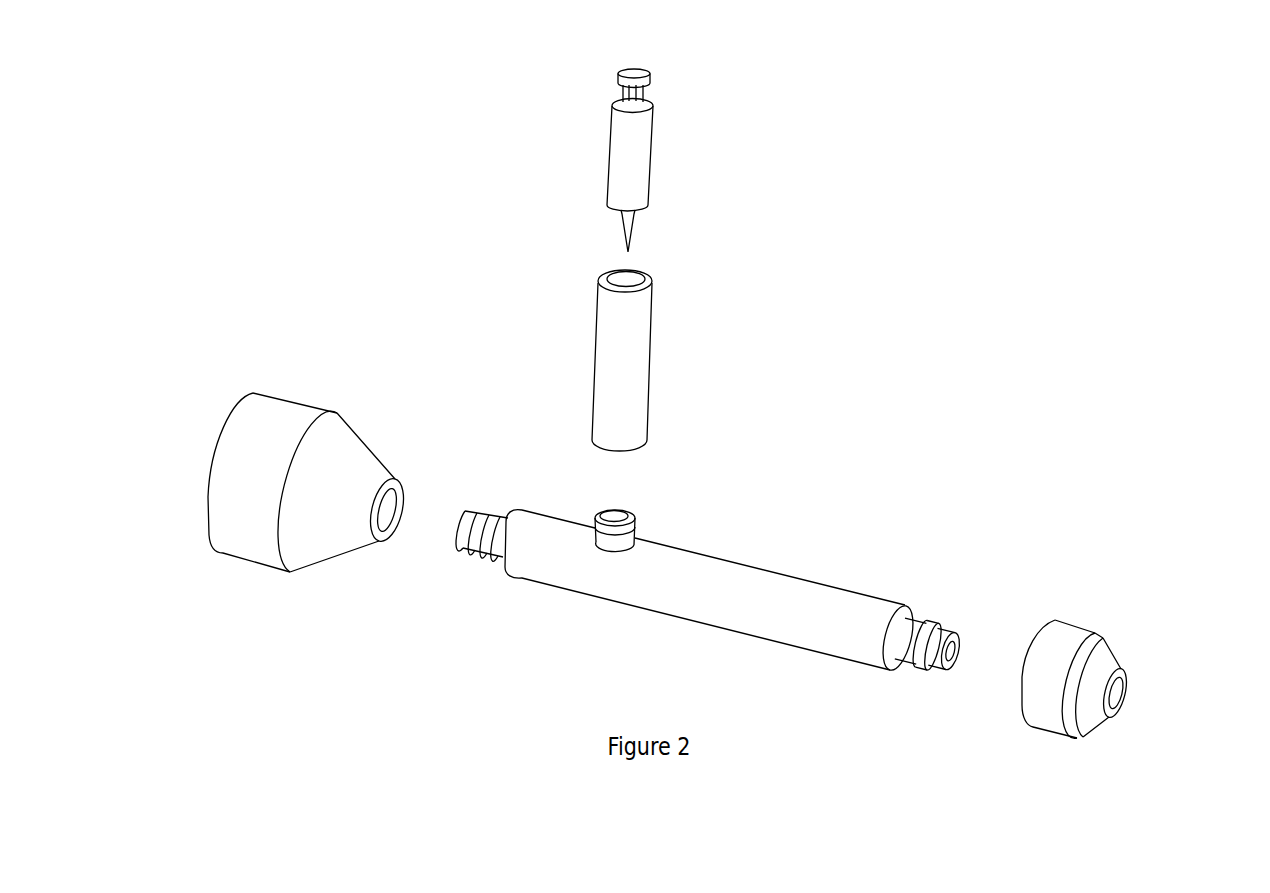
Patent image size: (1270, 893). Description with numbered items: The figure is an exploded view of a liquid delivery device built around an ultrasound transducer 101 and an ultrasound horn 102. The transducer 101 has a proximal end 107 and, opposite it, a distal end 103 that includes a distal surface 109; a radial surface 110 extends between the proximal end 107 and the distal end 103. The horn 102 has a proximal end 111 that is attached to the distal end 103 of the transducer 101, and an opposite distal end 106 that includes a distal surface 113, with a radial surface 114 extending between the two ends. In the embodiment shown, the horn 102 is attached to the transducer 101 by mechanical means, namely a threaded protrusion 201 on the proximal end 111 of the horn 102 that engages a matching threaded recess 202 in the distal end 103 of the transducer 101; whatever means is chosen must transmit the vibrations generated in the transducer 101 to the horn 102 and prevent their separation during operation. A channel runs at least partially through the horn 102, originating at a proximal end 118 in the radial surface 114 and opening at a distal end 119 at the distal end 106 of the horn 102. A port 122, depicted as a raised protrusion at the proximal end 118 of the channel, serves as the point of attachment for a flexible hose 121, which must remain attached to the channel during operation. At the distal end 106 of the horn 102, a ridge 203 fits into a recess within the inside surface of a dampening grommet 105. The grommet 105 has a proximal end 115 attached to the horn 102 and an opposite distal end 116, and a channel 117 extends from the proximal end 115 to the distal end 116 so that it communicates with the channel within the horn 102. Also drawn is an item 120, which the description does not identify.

The ultrasound transducer 101 is at (337, 491).
The radial surface 110 is at (307, 405).
The distal surface 109 is at (393, 487).
The threaded recess 202 is at (387, 513).
The proximal end 107 is at (207, 567).
The distal end 103 is at (277, 583).
The ultrasound horn 102 is at (733, 607).
The radial surface 114 is at (705, 552).
The proximal end 111 is at (510, 550).
The threaded protrusion 201 is at (495, 513).
The port 122 is at (644, 507).
The proximal end 118 is at (613, 518).
The distal end 106 is at (929, 652).
The ridge 203 is at (928, 623).
The distal surface 113 is at (952, 637).
The distal end 119 is at (950, 652).
The dampening grommet 105 is at (1098, 655).
The proximal end 115 is at (1057, 605).
The distal end 116 is at (1127, 623).
The channel 117 is at (1113, 695).
The syringe cartridge 120 is at (650, 153).
The flexible hose 121 is at (649, 352).